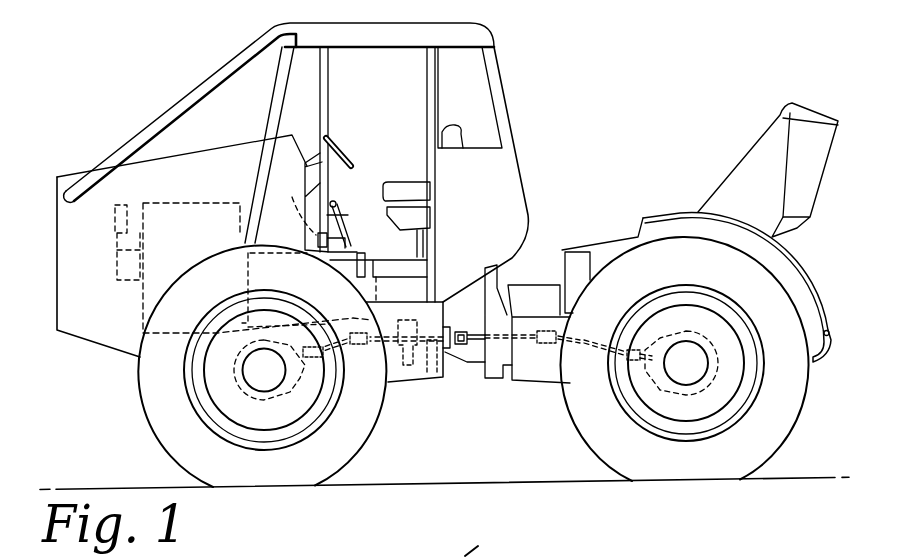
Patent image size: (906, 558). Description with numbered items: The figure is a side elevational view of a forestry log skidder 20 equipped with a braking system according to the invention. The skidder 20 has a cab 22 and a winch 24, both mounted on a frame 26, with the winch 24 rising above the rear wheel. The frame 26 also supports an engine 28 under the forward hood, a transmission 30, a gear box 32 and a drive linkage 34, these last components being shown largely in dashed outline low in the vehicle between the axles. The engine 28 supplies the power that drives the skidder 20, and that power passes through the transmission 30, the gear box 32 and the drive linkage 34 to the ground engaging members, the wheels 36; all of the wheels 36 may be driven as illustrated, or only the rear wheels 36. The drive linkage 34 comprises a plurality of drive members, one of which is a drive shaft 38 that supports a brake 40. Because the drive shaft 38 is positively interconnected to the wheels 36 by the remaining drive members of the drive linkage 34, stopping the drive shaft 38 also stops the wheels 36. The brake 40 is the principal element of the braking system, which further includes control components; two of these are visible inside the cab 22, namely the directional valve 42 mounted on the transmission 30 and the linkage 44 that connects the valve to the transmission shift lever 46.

The skidder 20 is at (200, 68).
The cab 22 is at (467, 27).
The winch 24 is at (803, 122).
The frame 26 is at (533, 384).
The engine 28 is at (197, 203).
The transmission 30 is at (280, 253).
The gear box 32 is at (450, 301).
The drive linkage 34 is at (461, 355).
The wheels 36 is at (173, 437).
The drive shaft 38 is at (428, 377).
The brake 40 is at (407, 380).
The directional valve 42 is at (296, 205).
The linkage 44 is at (346, 217).
The transmission shift lever 46 is at (335, 203).